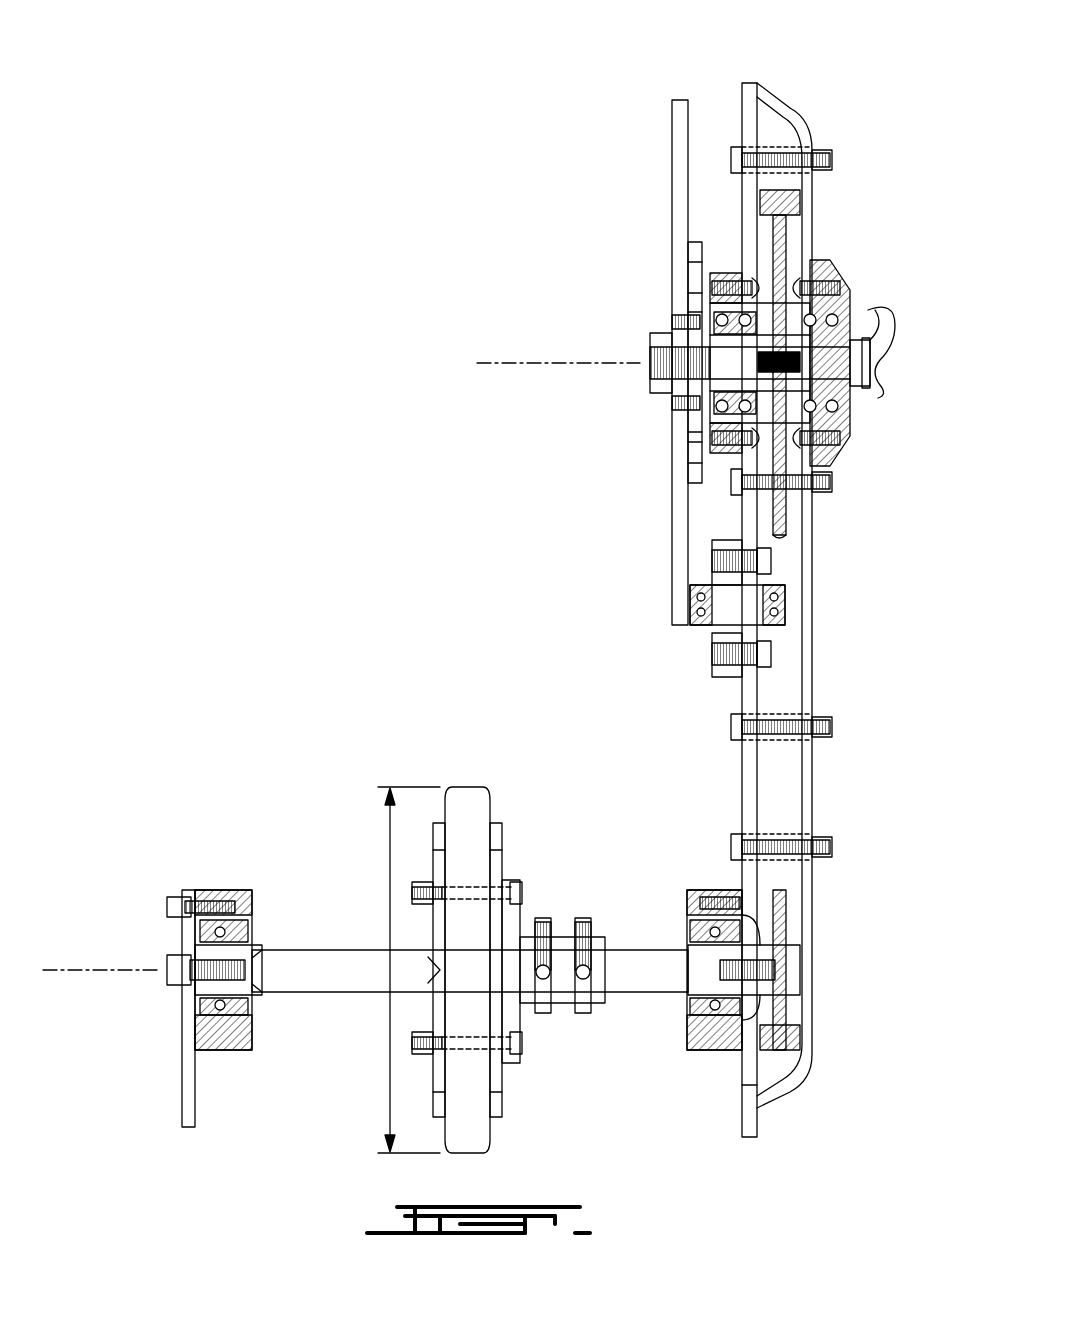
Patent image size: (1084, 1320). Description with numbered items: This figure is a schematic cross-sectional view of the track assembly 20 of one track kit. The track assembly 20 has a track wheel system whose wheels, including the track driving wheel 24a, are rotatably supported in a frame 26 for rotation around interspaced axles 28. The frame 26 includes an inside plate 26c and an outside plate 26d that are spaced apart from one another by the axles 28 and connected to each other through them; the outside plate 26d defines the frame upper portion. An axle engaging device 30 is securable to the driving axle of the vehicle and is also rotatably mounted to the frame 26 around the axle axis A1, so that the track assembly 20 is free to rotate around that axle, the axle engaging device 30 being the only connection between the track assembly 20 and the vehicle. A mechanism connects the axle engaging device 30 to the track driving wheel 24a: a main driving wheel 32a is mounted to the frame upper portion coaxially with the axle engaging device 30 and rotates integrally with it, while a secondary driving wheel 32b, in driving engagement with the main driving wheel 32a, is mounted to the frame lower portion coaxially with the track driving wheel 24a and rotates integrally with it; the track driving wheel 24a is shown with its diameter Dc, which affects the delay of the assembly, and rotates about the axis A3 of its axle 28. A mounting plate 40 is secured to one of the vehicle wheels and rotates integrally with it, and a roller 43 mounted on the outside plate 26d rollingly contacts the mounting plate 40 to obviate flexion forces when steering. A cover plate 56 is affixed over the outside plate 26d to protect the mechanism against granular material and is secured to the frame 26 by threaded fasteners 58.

The track assembly 20 is at (857, 118).
The frame 26 is at (835, 222).
The inside plate 26c is at (195, 1107).
The outside plate 26d is at (757, 1120).
The axles 28 is at (325, 950).
The axle engaging device 30 is at (727, 252).
The main driving wheel 32a is at (778, 536).
The secondary driving wheel 32b is at (788, 892).
The mounting plate 40 is at (672, 122).
The roller 43 is at (682, 655).
The track driving wheel 24a is at (505, 805).
The cover plate 56 is at (812, 620).
The threaded fasteners 58 is at (830, 727).
The axle axis A1 is at (558, 361).
The wheel axis A3 is at (103, 968).
The diameter of the track driving wheel Dc is at (385, 843).